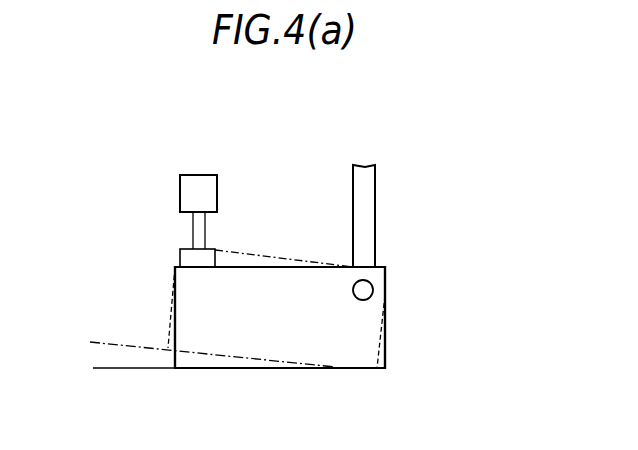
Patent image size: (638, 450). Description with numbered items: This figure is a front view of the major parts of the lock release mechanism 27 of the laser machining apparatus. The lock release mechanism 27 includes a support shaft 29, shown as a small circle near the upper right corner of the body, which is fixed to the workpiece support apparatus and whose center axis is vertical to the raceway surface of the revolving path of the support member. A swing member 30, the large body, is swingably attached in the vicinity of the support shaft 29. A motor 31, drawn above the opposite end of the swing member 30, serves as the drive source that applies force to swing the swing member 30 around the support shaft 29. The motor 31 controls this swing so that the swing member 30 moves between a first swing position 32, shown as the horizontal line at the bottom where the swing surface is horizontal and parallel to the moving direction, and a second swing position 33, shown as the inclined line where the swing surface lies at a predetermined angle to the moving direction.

The lock release mechanism 27 is at (145, 135).
The support shaft 29 is at (370, 292).
The swing member 30 is at (335, 350).
The motor 31 is at (188, 190).
The first swing position 32 is at (108, 370).
The second swing position 33 is at (111, 340).